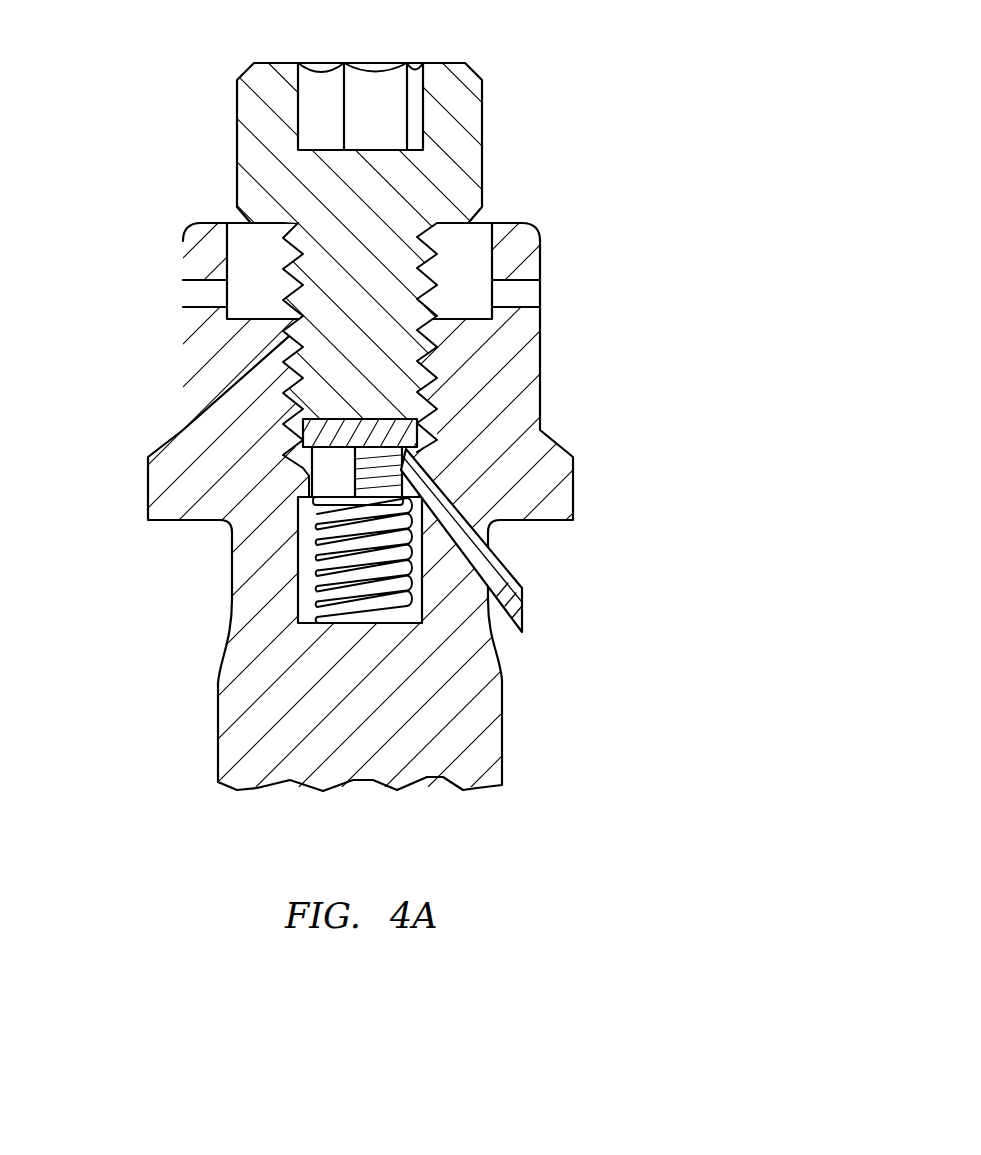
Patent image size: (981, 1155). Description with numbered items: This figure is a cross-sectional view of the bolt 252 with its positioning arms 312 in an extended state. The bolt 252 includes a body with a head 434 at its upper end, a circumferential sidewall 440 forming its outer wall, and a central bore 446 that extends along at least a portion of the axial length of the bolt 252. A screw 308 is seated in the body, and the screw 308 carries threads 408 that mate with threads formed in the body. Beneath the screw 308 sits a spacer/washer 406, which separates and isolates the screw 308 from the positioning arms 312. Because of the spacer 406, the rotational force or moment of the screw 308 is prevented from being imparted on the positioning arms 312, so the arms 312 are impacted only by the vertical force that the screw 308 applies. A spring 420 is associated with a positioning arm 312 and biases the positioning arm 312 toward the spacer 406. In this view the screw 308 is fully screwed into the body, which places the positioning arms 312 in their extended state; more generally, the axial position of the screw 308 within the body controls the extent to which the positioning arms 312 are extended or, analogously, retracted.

The bolt 252 is at (563, 68).
The screw 308 is at (277, 131).
The head 434 is at (208, 252).
The threads 408 is at (280, 331).
The spacer/washer 406 is at (317, 430).
The positioning arms 312 is at (396, 529).
The central bore 446 is at (383, 465).
The spring 420 is at (313, 575).
The circumferential sidewall 440 is at (500, 675).